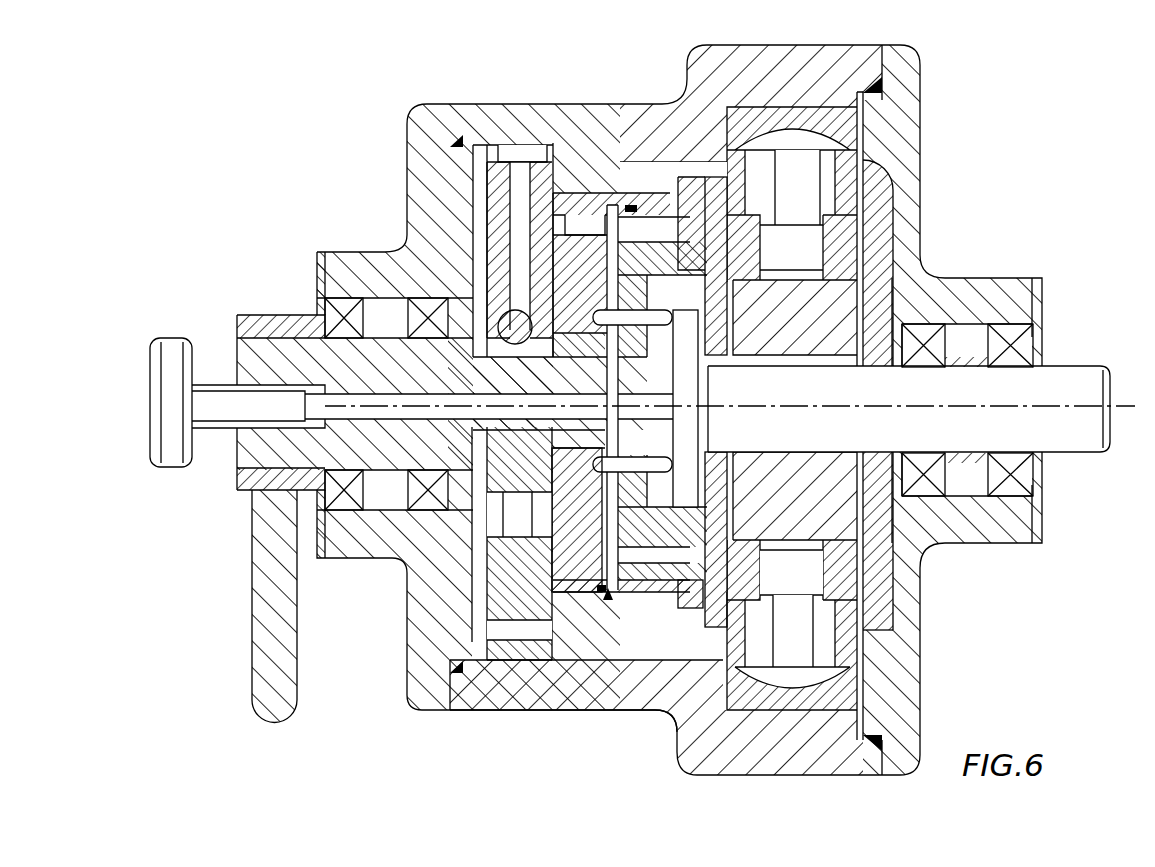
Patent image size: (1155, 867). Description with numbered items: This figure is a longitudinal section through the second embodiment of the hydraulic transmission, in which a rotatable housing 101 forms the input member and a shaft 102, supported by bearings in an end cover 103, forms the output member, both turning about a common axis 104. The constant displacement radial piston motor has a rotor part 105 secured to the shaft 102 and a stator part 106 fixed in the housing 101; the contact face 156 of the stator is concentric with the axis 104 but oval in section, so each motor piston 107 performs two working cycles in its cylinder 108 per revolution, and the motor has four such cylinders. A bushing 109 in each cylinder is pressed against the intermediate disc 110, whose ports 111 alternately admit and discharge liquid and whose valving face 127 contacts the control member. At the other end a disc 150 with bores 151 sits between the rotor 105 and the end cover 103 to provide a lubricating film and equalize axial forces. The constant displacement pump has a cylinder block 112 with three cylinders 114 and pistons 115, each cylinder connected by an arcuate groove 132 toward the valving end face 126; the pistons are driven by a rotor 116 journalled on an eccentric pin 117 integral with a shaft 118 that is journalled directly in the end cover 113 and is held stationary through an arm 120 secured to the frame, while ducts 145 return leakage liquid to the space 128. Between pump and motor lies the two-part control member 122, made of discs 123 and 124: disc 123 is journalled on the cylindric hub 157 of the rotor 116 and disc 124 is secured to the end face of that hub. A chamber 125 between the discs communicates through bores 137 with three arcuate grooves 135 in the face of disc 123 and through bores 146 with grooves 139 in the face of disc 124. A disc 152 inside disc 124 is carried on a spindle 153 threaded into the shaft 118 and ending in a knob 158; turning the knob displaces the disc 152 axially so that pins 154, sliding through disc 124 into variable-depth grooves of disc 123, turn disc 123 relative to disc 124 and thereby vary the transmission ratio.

The housing 101 is at (708, 88).
The shaft 102 is at (1068, 388).
The end cover 103 is at (1010, 288).
The axis 104 is at (958, 411).
The rotor part 105 is at (850, 298).
The stator part 106 is at (847, 123).
The motor piston 107 is at (807, 163).
The cylinder 108 is at (807, 217).
The bushing 109 is at (762, 238).
The intermediate disc 110 is at (707, 613).
The port 111 is at (712, 578).
The pump cylinder block 112 is at (497, 158).
The end cover 113 is at (367, 268).
The pump cylinder 114 is at (512, 172).
The pump piston 115 is at (513, 218).
The rotor 116 is at (540, 537).
The eccentric pin 117 is at (589, 391).
The shaft 118 is at (270, 352).
The arm 120 is at (268, 605).
The control member 122 is at (607, 598).
The disc 123 is at (567, 592).
The disc 124 is at (682, 596).
The chamber 125 is at (612, 283).
The valving end face 126 is at (557, 220).
The valving face 127 is at (645, 660).
The space 128 is at (568, 662).
The arcuate groove 132 is at (507, 147).
The arcuate groove 135 is at (588, 223).
The bore 137 is at (612, 198).
The arcuate groove 139 is at (730, 205).
The duct 145 is at (490, 630).
The bore 146 is at (642, 553).
The disc 150 is at (900, 552).
The bore 151 is at (897, 575).
The disc 152 is at (712, 380).
The spindle 153 is at (222, 412).
The pin 154 is at (650, 460).
The contact face 156 is at (680, 738).
The cylindric hub 157 is at (500, 470).
The knob 158 is at (170, 343).